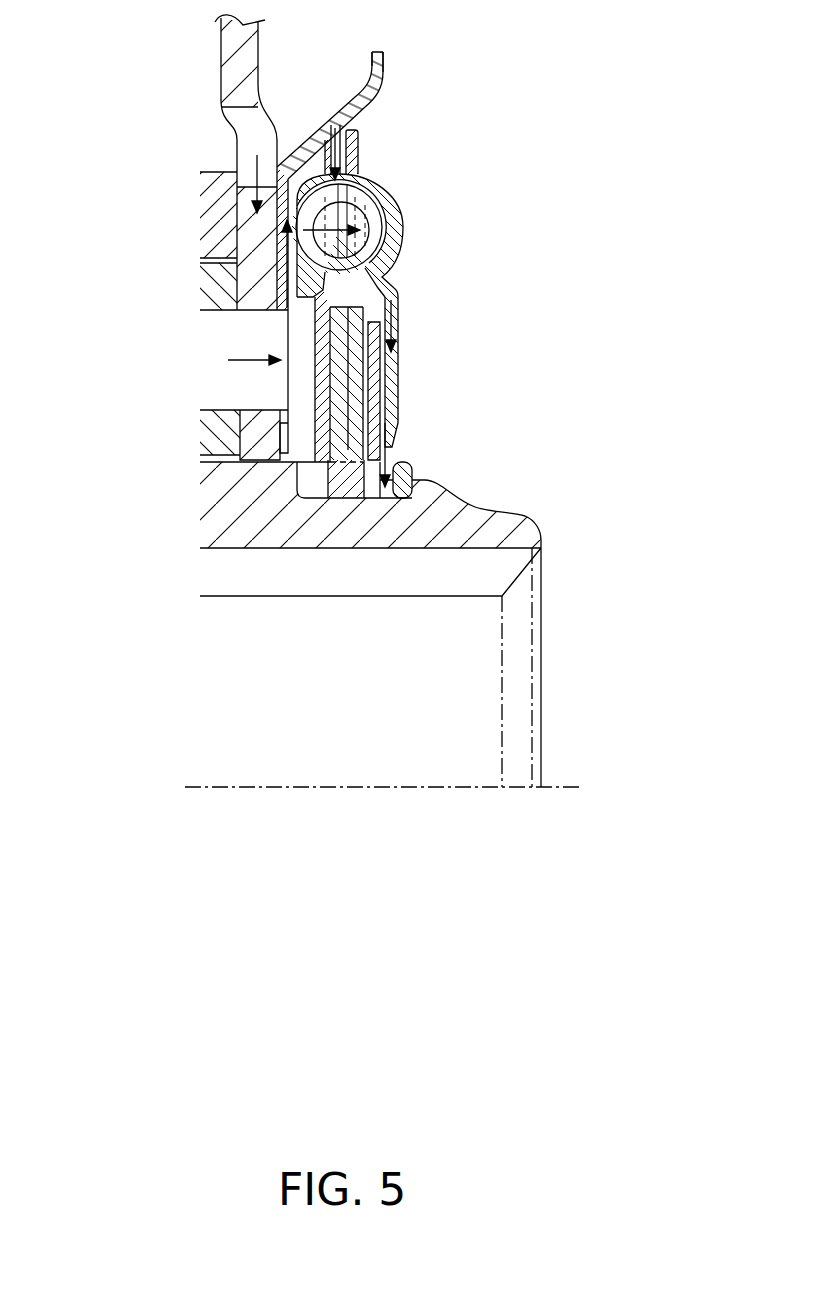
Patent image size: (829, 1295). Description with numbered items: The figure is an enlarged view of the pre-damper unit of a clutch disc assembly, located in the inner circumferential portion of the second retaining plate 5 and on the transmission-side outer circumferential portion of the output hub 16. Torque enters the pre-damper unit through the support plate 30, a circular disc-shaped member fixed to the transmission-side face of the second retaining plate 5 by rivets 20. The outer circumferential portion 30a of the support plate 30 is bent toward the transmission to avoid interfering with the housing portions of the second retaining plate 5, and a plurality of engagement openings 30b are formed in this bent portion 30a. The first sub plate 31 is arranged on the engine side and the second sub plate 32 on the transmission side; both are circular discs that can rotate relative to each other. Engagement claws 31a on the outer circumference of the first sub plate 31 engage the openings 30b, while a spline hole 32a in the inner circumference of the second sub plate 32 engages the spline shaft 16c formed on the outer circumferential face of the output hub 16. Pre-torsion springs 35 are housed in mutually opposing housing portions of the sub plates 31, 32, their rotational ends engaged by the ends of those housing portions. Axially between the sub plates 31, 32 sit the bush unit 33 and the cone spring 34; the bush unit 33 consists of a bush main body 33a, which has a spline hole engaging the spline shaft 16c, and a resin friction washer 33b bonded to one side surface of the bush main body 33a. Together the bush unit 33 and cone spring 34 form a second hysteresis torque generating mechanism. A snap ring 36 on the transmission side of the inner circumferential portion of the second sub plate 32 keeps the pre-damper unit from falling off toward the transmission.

The second retaining plate 5 is at (235, 42).
The output hub 16 is at (512, 530).
The spline shaft 16c is at (432, 493).
The rivets 20 is at (230, 335).
The support plate 30 is at (280, 133).
The outer circumferential portion 30a is at (385, 58).
The engagement openings 30b is at (300, 150).
The first sub plate 31 is at (322, 437).
The engagement claws 31a is at (347, 97).
The second sub plate 32 is at (390, 397).
The spline hole 32a is at (387, 490).
The bush unit 33 is at (388, 297).
The bush main body 33a is at (365, 367).
The friction washer 33b is at (335, 383).
The cone spring 34 is at (375, 420).
The pre-torsion springs 35 is at (392, 210).
The snap ring 36 is at (412, 467).